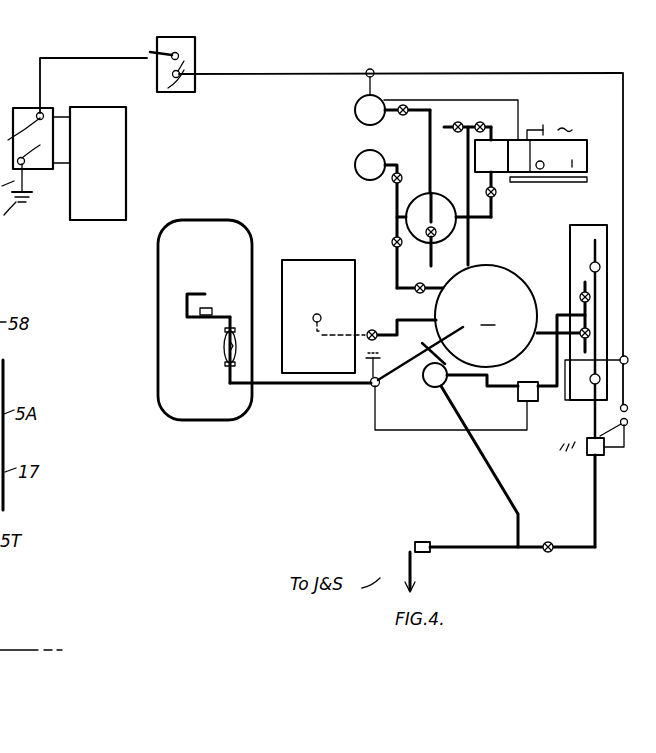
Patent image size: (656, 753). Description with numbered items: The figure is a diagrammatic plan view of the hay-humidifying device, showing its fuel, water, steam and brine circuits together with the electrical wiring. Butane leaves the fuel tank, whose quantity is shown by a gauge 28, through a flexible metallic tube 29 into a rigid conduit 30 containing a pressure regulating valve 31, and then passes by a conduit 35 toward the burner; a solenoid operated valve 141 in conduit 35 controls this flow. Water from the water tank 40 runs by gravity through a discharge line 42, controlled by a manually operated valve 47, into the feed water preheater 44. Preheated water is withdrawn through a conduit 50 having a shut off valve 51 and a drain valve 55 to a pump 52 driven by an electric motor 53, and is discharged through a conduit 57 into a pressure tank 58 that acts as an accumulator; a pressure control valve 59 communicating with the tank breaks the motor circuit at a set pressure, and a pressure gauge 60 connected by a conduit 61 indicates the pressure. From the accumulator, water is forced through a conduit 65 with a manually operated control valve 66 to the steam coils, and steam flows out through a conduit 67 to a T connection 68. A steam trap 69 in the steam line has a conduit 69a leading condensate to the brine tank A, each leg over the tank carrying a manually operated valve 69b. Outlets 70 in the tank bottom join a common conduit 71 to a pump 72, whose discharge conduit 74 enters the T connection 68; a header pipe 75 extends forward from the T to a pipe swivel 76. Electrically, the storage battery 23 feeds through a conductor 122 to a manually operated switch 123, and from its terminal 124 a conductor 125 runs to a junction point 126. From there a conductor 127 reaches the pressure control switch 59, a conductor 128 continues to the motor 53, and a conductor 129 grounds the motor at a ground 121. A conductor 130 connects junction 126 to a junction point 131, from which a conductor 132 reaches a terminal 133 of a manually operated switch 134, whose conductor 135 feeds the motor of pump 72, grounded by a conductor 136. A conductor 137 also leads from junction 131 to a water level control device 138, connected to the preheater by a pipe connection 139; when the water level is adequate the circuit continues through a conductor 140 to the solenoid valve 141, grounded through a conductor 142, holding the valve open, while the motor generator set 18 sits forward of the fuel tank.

The motor generator set 18 is at (110, 170).
The storage battery 23 is at (46, 172).
The gauge 28 is at (206, 310).
The flexible metallic tube 29 is at (208, 330).
The conduit 30 is at (266, 390).
The pressure regulating valve 31 is at (224, 352).
The conduit 35 is at (384, 374).
The water tank 40 is at (324, 303).
The discharge line 42 is at (406, 318).
The feed water preheater 44 is at (500, 284).
The manually operated valve 47 is at (378, 320).
The conduit 50 is at (472, 247).
The shut off valve 51 is at (511, 110).
The pump 52 is at (561, 178).
The electric motor 53 is at (515, 181).
The drain valve 55 is at (457, 112).
The conduit 57 is at (491, 224).
The pressure tank 58 is at (438, 205).
The pressure control valve 59 is at (357, 117).
The pressure gauge 60 is at (355, 167).
The conduit 61 is at (395, 200).
The conduit 65 is at (400, 271).
The manually operated control valve 66 is at (392, 242).
The conduit 67 is at (488, 474).
The T connection 68 is at (510, 550).
The steam trap 69 is at (425, 380).
The conduit 69a is at (447, 371).
The manually operated valve 69b is at (582, 292).
The outlets 70 is at (592, 267).
The conduit 71 is at (598, 303).
The pump 72 is at (590, 472).
The conduit 74 is at (597, 533).
The header pipe 75 is at (462, 550).
The pipe swivel 76 is at (434, 535).
The ground 121 is at (340, 356).
The insulated electrical conductor 122 is at (40, 90).
The manually operated switch 123 is at (106, 76).
The terminal 124 is at (160, 96).
The insulated electrical conductor 125 is at (183, 45).
The junction point 126 is at (373, 69).
The insulated conductor 127 is at (364, 99).
The conductor 128 is at (428, 103).
The insulated electrical conductor 129 is at (545, 128).
The insulated electrical conductor 130 is at (428, 118).
The junction point 131 is at (620, 360).
The conductor 132 is at (618, 372).
The terminal 133 is at (616, 423).
The manually operated switch 134 is at (590, 438).
The conductor 135 is at (604, 456).
The conductor 136 is at (586, 456).
The electrical conductor 137 is at (554, 380).
The water level control device 138 is at (530, 401).
The pipe connection 139 is at (482, 397).
The conductor 140 is at (451, 408).
The solenoid operated valve 141 is at (372, 386).
The conductor 142 is at (368, 374).
The tank A is at (604, 214).